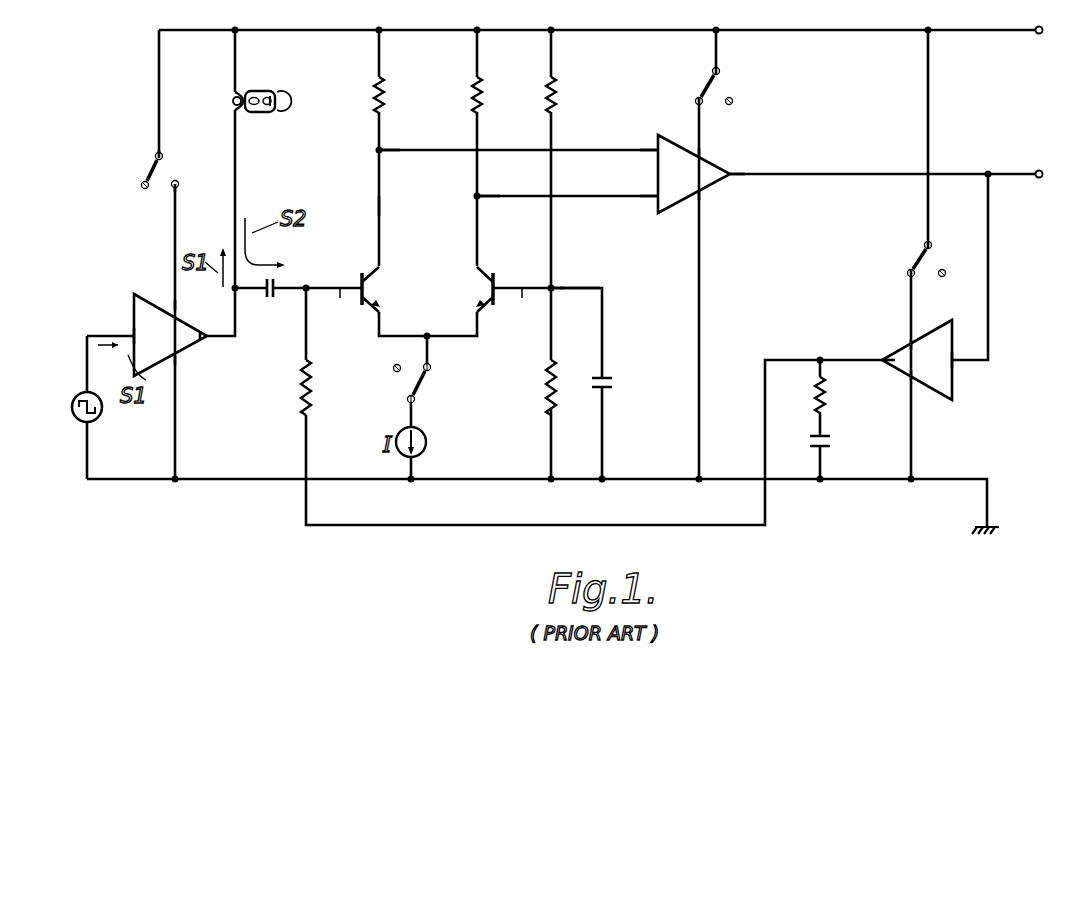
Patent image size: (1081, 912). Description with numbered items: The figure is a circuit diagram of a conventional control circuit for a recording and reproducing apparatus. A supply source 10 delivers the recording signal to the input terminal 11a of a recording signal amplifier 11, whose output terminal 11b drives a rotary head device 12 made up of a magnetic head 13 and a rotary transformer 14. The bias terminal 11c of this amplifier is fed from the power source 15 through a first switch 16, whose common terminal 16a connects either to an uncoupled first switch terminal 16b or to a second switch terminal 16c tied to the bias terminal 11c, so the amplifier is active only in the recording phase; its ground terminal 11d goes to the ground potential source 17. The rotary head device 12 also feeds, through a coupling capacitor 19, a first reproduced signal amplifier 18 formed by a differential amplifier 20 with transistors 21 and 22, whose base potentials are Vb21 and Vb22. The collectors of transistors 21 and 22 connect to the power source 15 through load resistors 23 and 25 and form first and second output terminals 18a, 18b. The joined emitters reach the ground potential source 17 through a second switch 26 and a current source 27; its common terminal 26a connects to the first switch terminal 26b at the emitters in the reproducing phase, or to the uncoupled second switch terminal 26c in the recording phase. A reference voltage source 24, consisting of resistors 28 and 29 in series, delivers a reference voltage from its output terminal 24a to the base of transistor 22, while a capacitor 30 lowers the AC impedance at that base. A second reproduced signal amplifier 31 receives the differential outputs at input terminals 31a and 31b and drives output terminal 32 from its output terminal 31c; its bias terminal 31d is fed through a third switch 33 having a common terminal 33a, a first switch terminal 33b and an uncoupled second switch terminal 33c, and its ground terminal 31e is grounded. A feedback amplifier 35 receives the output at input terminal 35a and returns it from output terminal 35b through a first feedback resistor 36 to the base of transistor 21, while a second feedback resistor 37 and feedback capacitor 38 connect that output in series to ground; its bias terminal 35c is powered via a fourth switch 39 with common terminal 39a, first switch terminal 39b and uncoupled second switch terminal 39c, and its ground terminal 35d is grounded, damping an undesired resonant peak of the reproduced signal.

The supply source 10 is at (100, 420).
The recording signal amplifier 11 is at (160, 290).
The input terminal 11a is at (133, 330).
The output terminal 11b is at (205, 337).
The bias terminal 11c is at (175, 310).
The ground terminal 11d is at (177, 358).
The rotary head device 12 is at (254, 90).
The magnetic head 13 is at (283, 101).
The rotary transformer 14 is at (243, 112).
The power source 15 is at (1036, 36).
The first switch 16 is at (150, 168).
The common terminal 16a is at (162, 154).
The first switch terminal 16b is at (142, 188).
The second switch terminal 16c is at (177, 188).
The ground potential source 17 is at (972, 527).
The first reproduced signal amplifier 18 is at (386, 203).
The first output terminal 18a is at (382, 152).
The second output terminal 18b is at (480, 195).
The coupling capacitor 19 is at (270, 300).
The differential amplifier 20 is at (428, 290).
The transistor 21 is at (360, 285).
The transistor 22 is at (496, 282).
The load resistor 23 is at (383, 96).
The reference voltage source 24 is at (588, 284).
The reference voltage output terminal 24a is at (572, 283).
The load resistor 25 is at (481, 96).
The second switch 26 is at (408, 384).
The common terminal 26a is at (415, 399).
The first switch terminal 26b is at (430, 368).
The second switch terminal 26c is at (393, 367).
The current source 27 is at (428, 442).
The resistor 28 is at (555, 96).
The resistor 29 is at (555, 395).
The capacitor 30 is at (608, 387).
The second reproduced signal amplifier 31 is at (677, 210).
The input terminal 31a is at (656, 148).
The input terminal 31b is at (656, 194).
The output terminal 31c is at (730, 176).
The bias terminal 31d is at (700, 152).
The ground terminal 31e is at (700, 193).
The output terminal 32 is at (1037, 170).
The third switch 33 is at (707, 75).
The common terminal 33a is at (719, 70).
The first switch terminal 33b is at (696, 100).
The second switch terminal 33c is at (732, 100).
The feedback amplifier 35 is at (945, 402).
The input terminal 35a is at (955, 365).
The output terminal 35b is at (883, 359).
The bias terminal 35c is at (908, 345).
The ground terminal 35d is at (908, 378).
The first feedback resistor 36 is at (300, 398).
The second feedback resistor 37 is at (813, 390).
The feedback capacitor 38 is at (815, 445).
The fourth switch 39 is at (920, 247).
The common terminal 39a is at (930, 243).
The first switch terminal 39b is at (908, 271).
The second switch terminal 39c is at (946, 271).
The base potential Vb21 is at (342, 307).
The base potential Vb22 is at (522, 298).